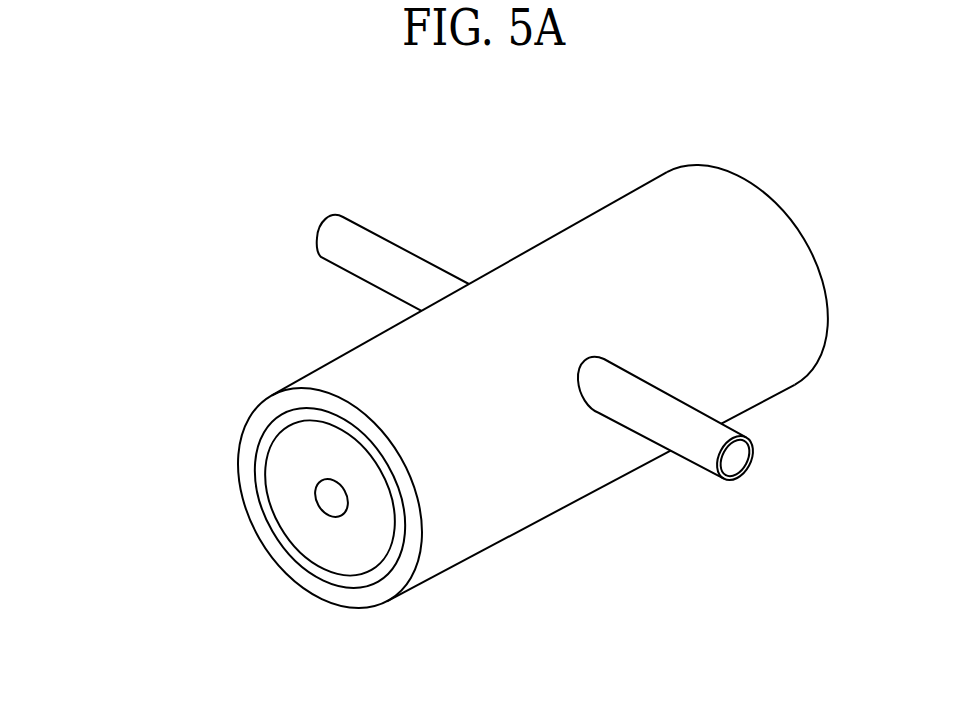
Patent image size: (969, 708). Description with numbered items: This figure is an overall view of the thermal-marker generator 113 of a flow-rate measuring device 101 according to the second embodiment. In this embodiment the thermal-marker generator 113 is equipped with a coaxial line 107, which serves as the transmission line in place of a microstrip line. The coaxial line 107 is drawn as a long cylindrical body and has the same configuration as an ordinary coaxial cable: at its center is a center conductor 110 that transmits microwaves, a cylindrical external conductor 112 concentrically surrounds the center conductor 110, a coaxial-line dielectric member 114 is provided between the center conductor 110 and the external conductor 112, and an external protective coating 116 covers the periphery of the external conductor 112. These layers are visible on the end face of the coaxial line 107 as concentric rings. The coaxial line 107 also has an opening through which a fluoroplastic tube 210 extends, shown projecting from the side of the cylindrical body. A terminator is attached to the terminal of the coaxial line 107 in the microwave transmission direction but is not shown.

The flow-rate measuring device 101 is at (139, 114).
The coaxial line 107 is at (563, 219).
The thermal-marker generator 113 is at (771, 139).
The fluoroplastic tube 210 is at (368, 242).
The external protective coating 116 is at (363, 598).
The external conductor 112 is at (321, 566).
The coaxial-line dielectric member 114 is at (288, 447).
The center conductor 110 is at (330, 502).